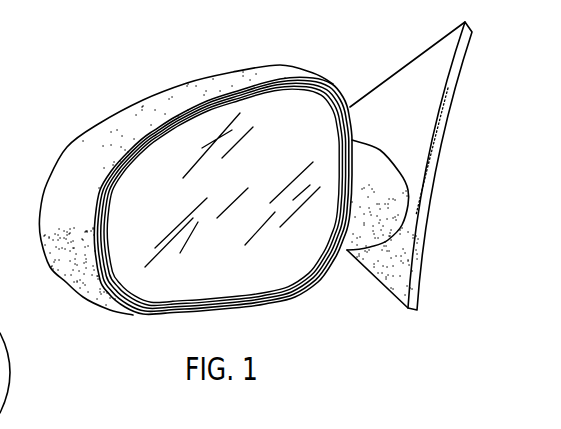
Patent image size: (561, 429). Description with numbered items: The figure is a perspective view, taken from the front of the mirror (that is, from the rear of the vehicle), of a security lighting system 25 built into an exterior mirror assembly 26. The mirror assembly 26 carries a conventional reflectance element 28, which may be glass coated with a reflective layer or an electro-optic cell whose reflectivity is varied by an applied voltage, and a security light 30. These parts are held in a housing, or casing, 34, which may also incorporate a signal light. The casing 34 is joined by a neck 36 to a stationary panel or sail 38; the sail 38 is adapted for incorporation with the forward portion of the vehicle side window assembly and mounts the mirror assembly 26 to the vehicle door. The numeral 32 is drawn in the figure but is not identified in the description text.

The security lighting system 25 is at (279, 32).
The exterior mirror assembly 26 is at (289, 64).
The reflectance element 28 is at (216, 110).
The security light 30 is at (287, 307).
The bezel lip 32 is at (152, 317).
The housing 34 is at (68, 147).
The neck 36 is at (372, 247).
The sail 38 is at (443, 128).